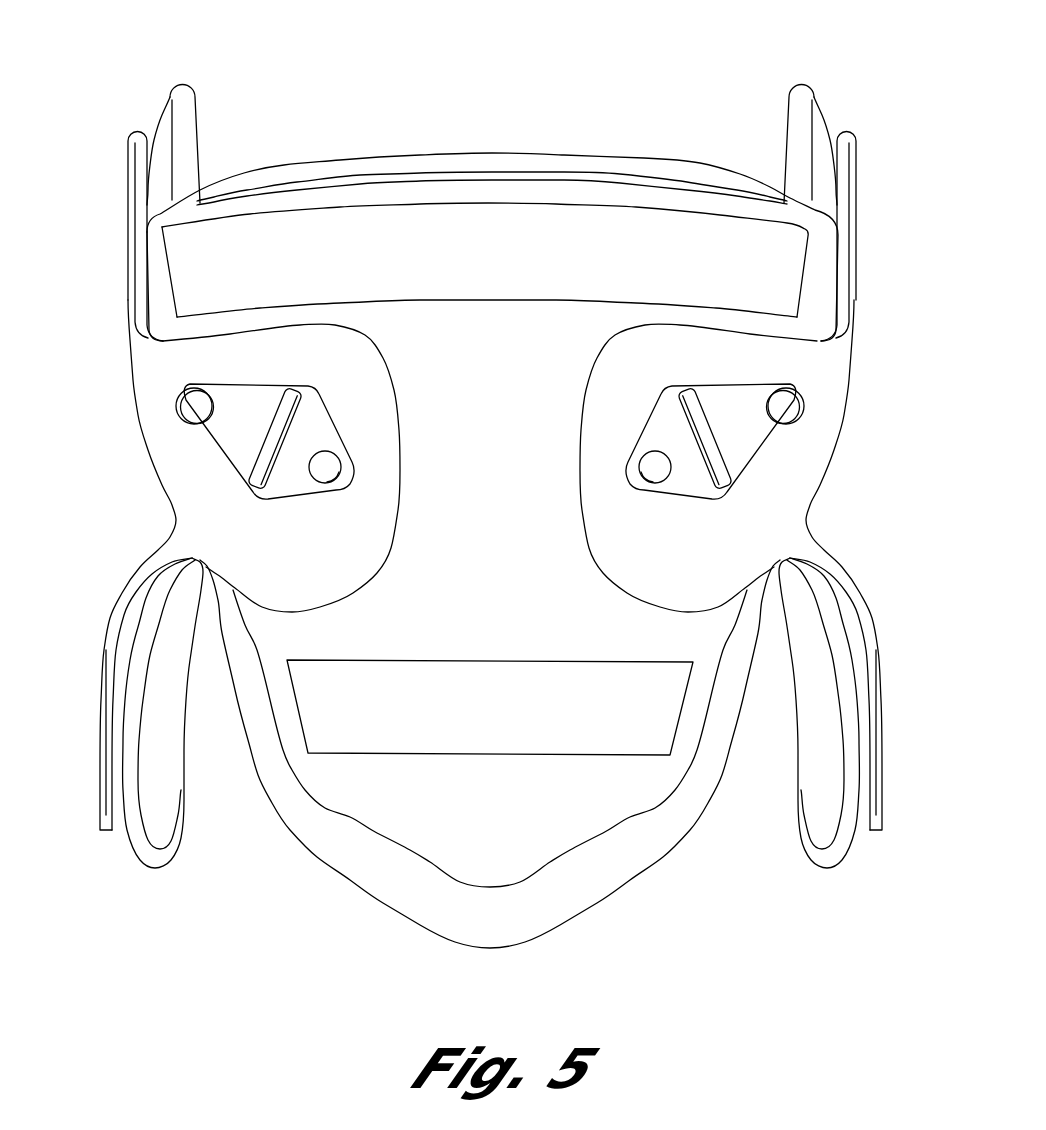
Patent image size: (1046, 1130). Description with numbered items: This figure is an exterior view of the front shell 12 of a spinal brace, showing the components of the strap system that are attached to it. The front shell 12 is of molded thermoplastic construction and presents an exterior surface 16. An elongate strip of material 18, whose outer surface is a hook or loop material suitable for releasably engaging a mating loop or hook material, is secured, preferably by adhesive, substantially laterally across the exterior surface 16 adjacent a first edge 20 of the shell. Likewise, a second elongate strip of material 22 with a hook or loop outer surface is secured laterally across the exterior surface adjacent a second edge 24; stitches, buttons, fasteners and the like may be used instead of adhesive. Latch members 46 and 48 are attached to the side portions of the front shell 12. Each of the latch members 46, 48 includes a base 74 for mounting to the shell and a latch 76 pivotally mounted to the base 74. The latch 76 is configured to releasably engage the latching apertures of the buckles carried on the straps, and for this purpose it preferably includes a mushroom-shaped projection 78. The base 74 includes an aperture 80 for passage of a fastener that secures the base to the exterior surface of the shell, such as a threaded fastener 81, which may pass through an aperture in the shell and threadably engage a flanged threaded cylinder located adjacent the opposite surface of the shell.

The front shell 12 is at (352, 78).
The exterior surface 16 is at (484, 479).
The elongate strip of material 18 is at (532, 272).
The first edge 20 is at (596, 178).
The elongate strip of material 22 is at (467, 733).
The second edge 24 is at (603, 810).
The latch member 46 is at (665, 352).
The latch member 48 is at (338, 396).
The base 74 is at (680, 487).
The latch 76 is at (753, 455).
The mushroom-shaped projection 78 is at (190, 413).
The aperture 80 is at (355, 454).
The threaded fastener 81 is at (333, 473).